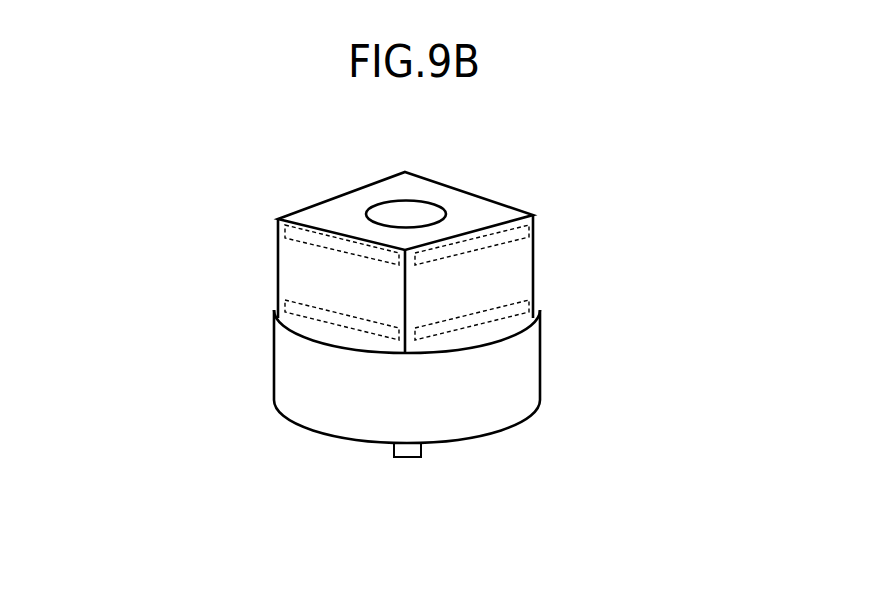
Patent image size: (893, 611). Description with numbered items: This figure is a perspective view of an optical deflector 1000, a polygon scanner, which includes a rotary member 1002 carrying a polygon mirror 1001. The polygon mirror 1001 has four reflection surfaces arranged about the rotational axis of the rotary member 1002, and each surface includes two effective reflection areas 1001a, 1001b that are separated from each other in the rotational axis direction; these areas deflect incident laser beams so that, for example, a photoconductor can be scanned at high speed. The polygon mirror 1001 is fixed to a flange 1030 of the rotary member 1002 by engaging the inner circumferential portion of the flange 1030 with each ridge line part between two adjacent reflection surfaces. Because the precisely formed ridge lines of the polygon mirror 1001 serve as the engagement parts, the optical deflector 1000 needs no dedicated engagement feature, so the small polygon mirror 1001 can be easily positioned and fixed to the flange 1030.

The optical deflector 1000 is at (397, 129).
The polygon mirror 1001 is at (473, 192).
The effective reflection area 1001a is at (278, 233).
The effective reflection area 1001b is at (280, 298).
The rotary member 1002 is at (318, 181).
The flange 1030 is at (540, 362).